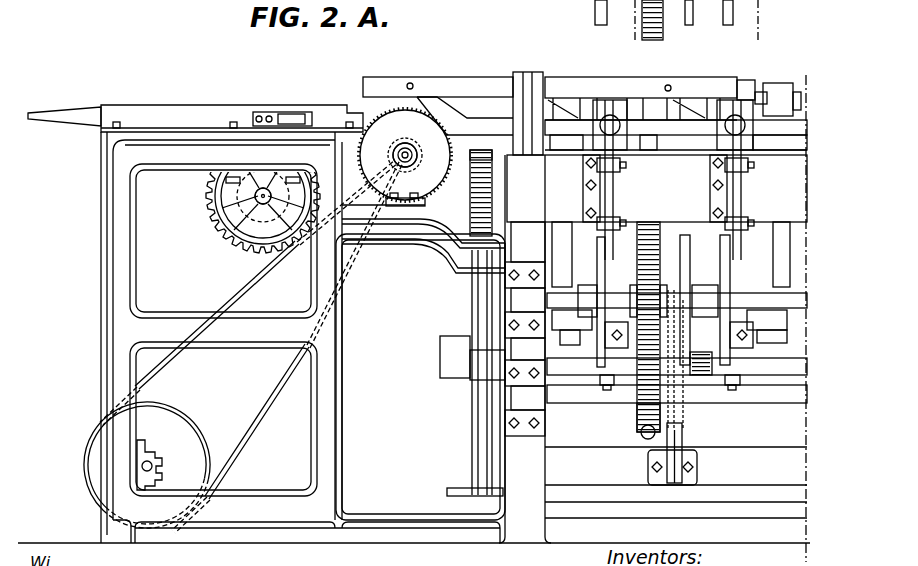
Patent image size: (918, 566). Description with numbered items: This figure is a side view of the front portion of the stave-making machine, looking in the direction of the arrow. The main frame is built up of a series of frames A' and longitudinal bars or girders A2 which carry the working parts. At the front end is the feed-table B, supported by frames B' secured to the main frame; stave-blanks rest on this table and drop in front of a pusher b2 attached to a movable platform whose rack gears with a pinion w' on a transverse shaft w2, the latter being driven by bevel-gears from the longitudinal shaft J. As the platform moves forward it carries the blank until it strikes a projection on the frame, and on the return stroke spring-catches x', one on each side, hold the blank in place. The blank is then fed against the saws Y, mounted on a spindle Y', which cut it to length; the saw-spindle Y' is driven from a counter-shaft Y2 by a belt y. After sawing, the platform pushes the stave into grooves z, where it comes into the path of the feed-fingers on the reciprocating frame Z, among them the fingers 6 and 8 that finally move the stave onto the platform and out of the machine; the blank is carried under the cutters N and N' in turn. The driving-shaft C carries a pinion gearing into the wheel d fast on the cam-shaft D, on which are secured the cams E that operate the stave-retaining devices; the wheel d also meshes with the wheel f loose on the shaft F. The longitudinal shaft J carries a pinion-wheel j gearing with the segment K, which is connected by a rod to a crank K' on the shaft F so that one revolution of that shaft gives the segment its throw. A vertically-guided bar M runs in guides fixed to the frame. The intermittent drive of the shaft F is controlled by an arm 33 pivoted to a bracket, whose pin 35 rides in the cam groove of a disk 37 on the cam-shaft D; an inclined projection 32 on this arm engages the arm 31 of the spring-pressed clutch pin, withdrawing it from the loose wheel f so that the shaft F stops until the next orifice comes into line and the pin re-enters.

The table B is at (414, 316).
The pusher b2 is at (64, 111).
The spring-catches x' is at (282, 108).
The frames B' is at (231, 330).
The pinion w' is at (253, 200).
The transverse shaft w2 is at (265, 190).
The saws Y is at (405, 158).
The saw-spindle Y' is at (417, 156).
The counter-shaft Y2 is at (159, 465).
The belt y is at (243, 346).
The segment K is at (420, 377).
The crank K' is at (463, 358).
The longitudinal shaft J is at (461, 204).
The pinion-wheel j is at (479, 154).
The reciprocating frame Z is at (438, 78).
The grooves z is at (465, 116).
The frames A' is at (525, 307).
The longitudinal bars or girders A2 is at (657, 188).
The cutter N is at (641, 90).
The cutter N' is at (769, 90).
The vertically-guided bar M is at (670, 232).
The cams E is at (594, 12).
The gear-wheel d is at (631, 263).
The cam-shaft D is at (677, 316).
The disk 37 is at (688, 266).
The pin 35 is at (676, 300).
The shaft F is at (677, 374).
The driving-shaft C is at (677, 394).
The pinion C' is at (637, 428).
The wheel f is at (645, 434).
The arm 33 is at (682, 430).
The inclined projection 32 is at (688, 378).
The arm 31 is at (688, 370).
The fingers 6 is at (640, 35).
The fingers 8 is at (762, 33).